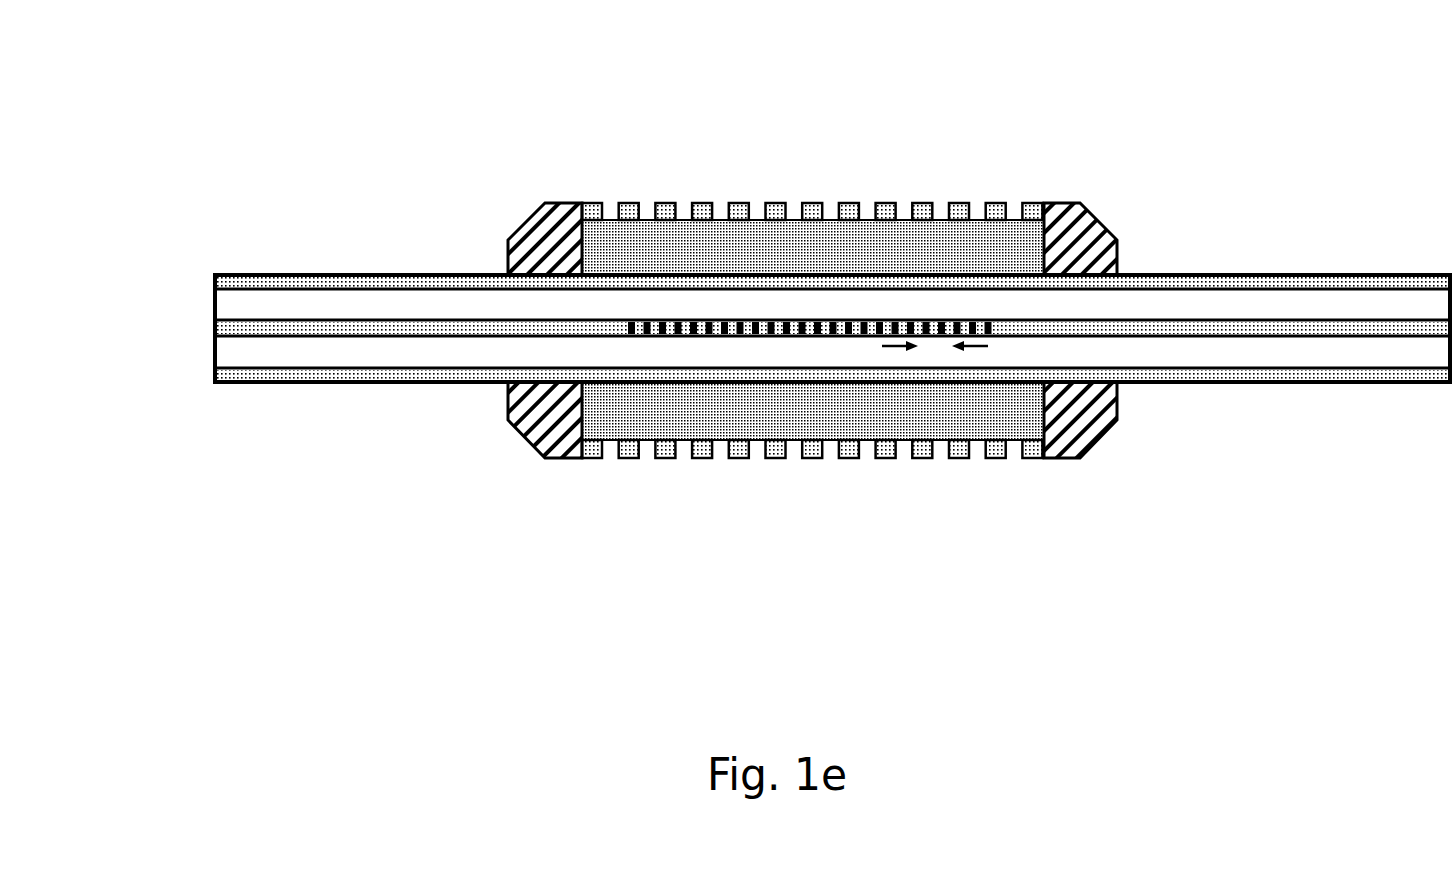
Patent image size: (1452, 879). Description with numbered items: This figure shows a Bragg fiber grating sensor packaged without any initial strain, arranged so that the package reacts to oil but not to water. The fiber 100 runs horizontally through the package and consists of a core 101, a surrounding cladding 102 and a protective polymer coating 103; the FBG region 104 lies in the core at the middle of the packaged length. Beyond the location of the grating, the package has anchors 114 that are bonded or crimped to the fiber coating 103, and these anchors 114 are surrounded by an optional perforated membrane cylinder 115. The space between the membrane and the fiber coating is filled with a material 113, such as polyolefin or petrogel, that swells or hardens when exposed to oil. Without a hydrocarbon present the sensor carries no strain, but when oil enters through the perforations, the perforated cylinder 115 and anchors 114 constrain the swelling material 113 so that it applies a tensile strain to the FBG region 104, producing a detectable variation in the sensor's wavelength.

The fiber 100 is at (213, 351).
The core 101 is at (233, 332).
The cladding 102 is at (287, 308).
The protective polymer coating 103 is at (428, 276).
The FBG region 104 is at (997, 333).
The swelling material 113 is at (957, 235).
The anchors 114 is at (545, 203).
The perforated membrane cylinder 115 is at (775, 207).